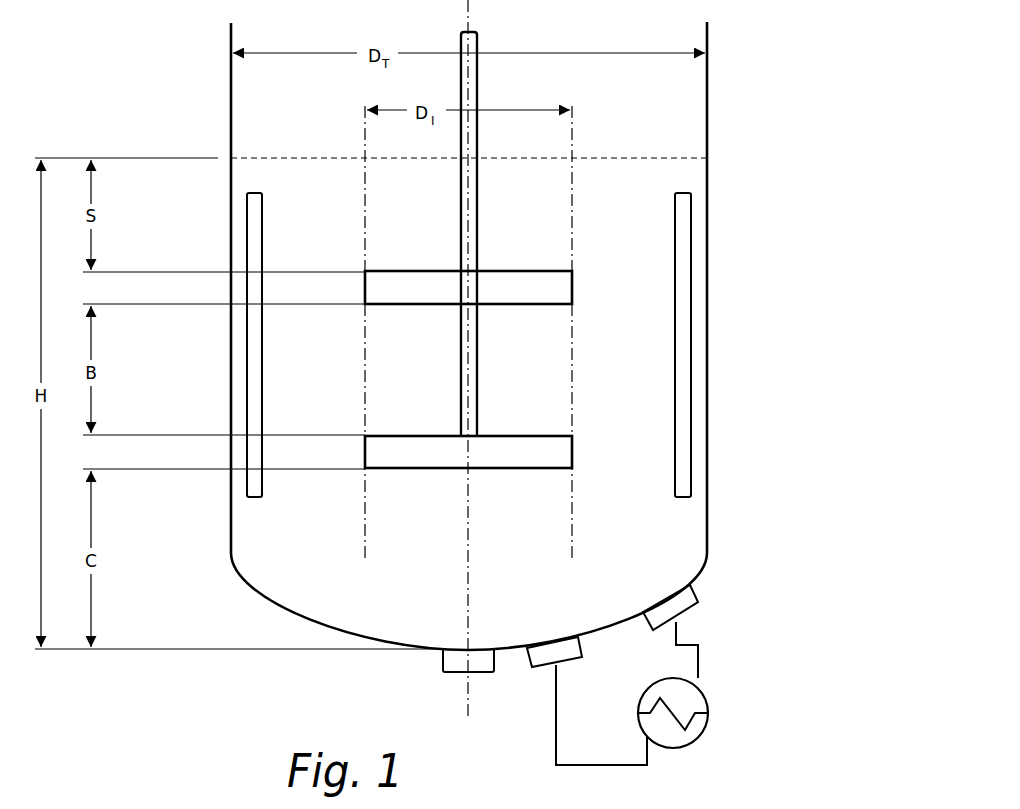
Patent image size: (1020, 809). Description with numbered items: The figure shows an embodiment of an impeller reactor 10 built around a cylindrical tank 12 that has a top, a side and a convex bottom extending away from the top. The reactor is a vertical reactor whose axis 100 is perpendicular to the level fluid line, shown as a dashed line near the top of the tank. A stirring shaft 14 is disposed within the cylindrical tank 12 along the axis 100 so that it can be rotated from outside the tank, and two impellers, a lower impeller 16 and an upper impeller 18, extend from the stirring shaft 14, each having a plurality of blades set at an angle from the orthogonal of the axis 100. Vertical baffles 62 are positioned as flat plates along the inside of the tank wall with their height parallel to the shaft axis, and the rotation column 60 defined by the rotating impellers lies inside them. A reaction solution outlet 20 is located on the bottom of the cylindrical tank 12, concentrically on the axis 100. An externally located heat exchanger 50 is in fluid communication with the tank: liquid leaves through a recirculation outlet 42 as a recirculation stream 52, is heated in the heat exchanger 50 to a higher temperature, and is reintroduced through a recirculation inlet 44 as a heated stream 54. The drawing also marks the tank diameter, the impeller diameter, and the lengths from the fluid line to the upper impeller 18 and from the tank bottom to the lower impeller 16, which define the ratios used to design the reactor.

The reactor 10 is at (167, 70).
The cylindrical tank 12 is at (707, 188).
The stirring shaft 14 is at (477, 47).
The lower impeller 16 is at (423, 452).
The upper impeller 18 is at (423, 288).
The reaction solution outlet 20 is at (457, 665).
The recirculation outlet 42 is at (547, 655).
The recirculation inlet 44 is at (697, 612).
The externally located heat exchanger 50 is at (698, 737).
The recirculation stream 52 is at (555, 723).
The heated stream 54 is at (702, 667).
The rotation column 60 is at (573, 230).
The vertical baffles 62 is at (685, 404).
The axis 100 is at (466, 21).